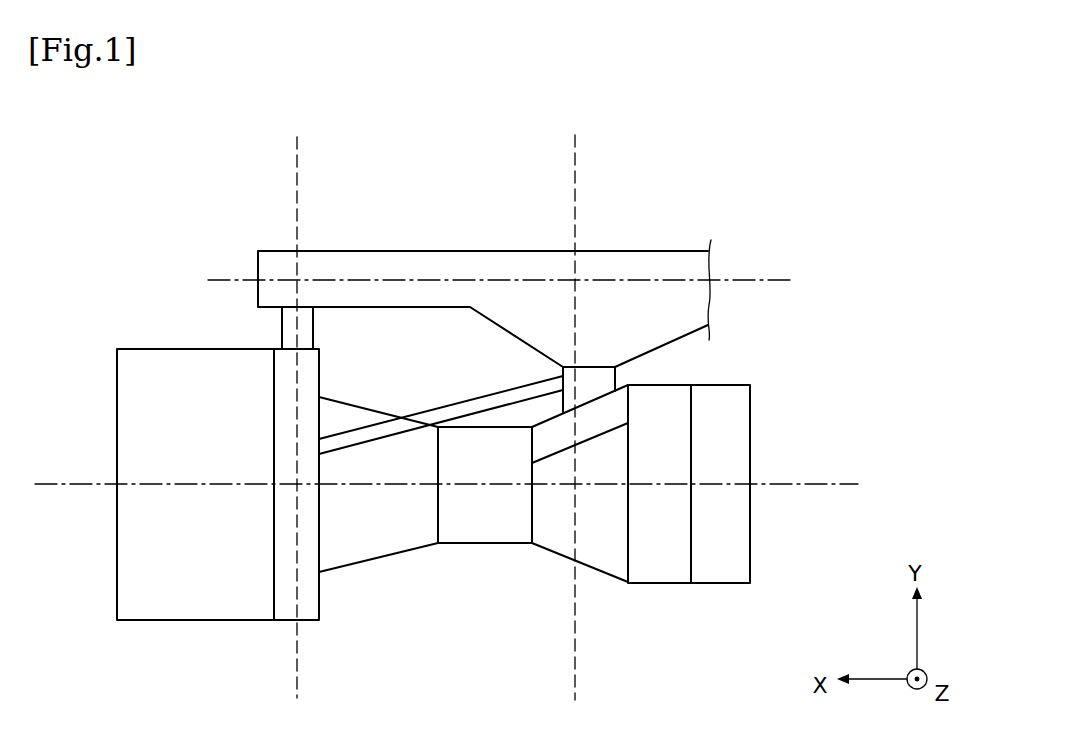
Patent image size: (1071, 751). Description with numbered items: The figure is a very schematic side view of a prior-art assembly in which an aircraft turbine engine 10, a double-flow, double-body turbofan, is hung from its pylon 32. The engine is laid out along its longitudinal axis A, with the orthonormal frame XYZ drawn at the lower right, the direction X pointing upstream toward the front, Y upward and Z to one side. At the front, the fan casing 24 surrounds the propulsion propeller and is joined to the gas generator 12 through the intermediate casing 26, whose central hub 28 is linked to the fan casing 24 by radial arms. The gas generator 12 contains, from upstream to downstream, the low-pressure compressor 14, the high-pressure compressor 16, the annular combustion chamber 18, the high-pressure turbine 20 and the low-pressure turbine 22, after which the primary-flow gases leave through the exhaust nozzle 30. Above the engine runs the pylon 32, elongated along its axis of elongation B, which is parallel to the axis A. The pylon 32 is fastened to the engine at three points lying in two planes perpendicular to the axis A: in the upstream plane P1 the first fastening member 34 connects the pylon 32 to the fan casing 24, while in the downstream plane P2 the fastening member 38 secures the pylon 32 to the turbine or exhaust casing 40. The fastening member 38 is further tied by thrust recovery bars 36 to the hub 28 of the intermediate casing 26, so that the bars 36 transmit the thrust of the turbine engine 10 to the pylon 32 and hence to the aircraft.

The turbine engine 10 is at (820, 348).
The gas generator 12 is at (456, 568).
The low-pressure compressor 14 is at (322, 574).
The high-pressure compressor 16 is at (408, 457).
The annular combustion chamber 18 is at (510, 530).
The high-pressure turbine 20 is at (562, 535).
The low-pressure turbine 22 is at (613, 548).
The fan casing 24 is at (207, 610).
The intermediate casing 26 is at (288, 626).
The central hub 28 is at (320, 416).
The exhaust nozzle 30 is at (732, 445).
The pylon 32 is at (677, 246).
The first fastening member 34 is at (303, 320).
The thrust recovery bars 36 is at (347, 448).
The fastening member 38 is at (592, 387).
The turbine or exhaust casing 40 is at (590, 428).
The upstream plane P1 is at (297, 152).
The downstream plane P2 is at (575, 153).
The longitudinal axis A is at (814, 486).
The axis of elongation B is at (777, 280).